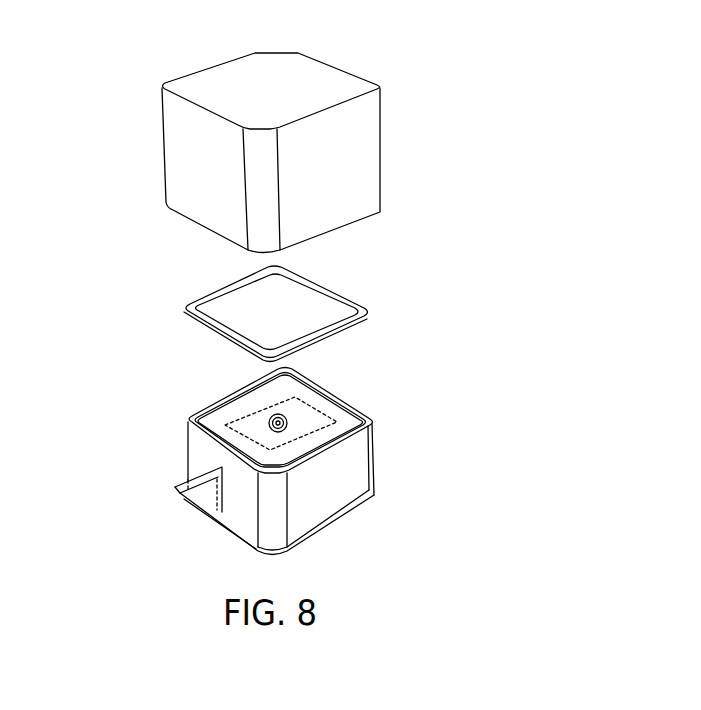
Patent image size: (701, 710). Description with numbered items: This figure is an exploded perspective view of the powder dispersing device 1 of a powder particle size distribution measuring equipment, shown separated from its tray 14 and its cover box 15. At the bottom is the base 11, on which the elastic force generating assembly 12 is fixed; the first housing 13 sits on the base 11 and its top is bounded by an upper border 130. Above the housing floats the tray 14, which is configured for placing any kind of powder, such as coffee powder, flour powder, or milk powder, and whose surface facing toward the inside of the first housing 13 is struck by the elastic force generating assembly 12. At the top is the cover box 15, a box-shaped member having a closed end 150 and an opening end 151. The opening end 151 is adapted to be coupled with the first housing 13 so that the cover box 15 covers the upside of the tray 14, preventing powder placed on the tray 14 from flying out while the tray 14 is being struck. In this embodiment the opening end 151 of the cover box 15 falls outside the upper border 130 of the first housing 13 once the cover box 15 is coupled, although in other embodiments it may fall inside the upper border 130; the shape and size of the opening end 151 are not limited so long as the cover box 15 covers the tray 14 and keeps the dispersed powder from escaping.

The powder dispersing device 1 is at (65, 59).
The cover box 15 is at (316, 144).
The closed end 150 is at (333, 83).
The opening end 151 is at (363, 218).
The tray 14 is at (358, 326).
The first housing 13 is at (309, 411).
The elastic force generating assembly 12 is at (250, 413).
The upper border 130 is at (205, 446).
The base 11 is at (285, 452).